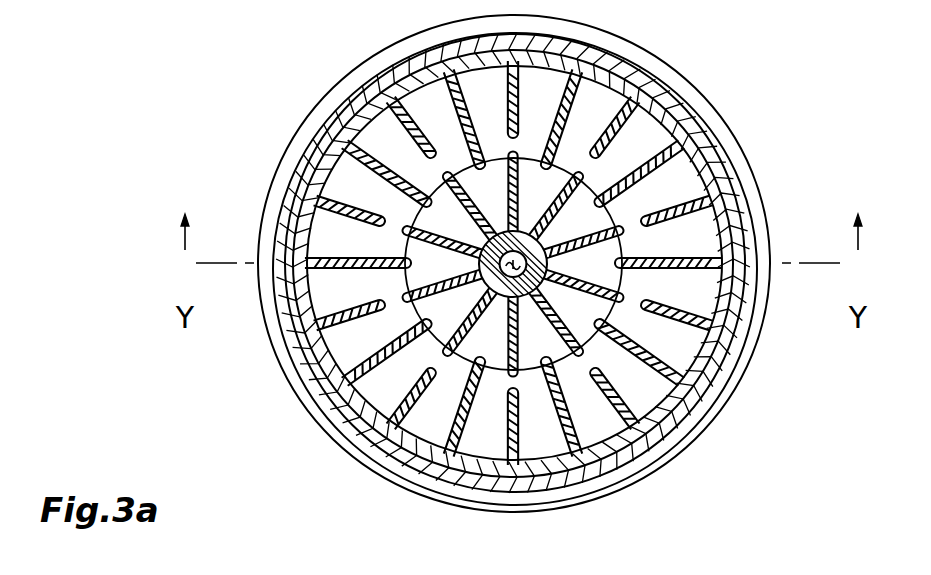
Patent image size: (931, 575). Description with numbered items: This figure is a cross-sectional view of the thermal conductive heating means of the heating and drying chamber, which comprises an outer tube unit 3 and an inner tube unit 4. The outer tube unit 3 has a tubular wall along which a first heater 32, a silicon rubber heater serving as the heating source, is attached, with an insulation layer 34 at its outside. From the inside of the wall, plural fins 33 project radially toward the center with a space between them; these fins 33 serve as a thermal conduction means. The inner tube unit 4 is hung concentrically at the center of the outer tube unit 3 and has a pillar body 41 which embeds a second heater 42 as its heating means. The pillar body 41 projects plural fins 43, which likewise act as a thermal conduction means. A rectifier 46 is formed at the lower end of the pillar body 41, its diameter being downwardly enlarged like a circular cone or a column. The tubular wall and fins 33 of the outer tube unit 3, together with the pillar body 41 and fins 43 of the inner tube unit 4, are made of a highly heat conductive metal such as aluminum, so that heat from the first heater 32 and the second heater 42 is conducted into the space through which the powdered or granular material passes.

The outer tube unit 3 is at (772, 336).
The first heater 32 is at (645, 360).
The fins 33 is at (657, 340).
The insulation layer 34 is at (718, 147).
The inner tube unit 4 is at (604, 180).
The pillar body 41 is at (488, 239).
The second heater 42 is at (488, 286).
The fins 43 is at (410, 293).
The rectifier 46 is at (450, 357).